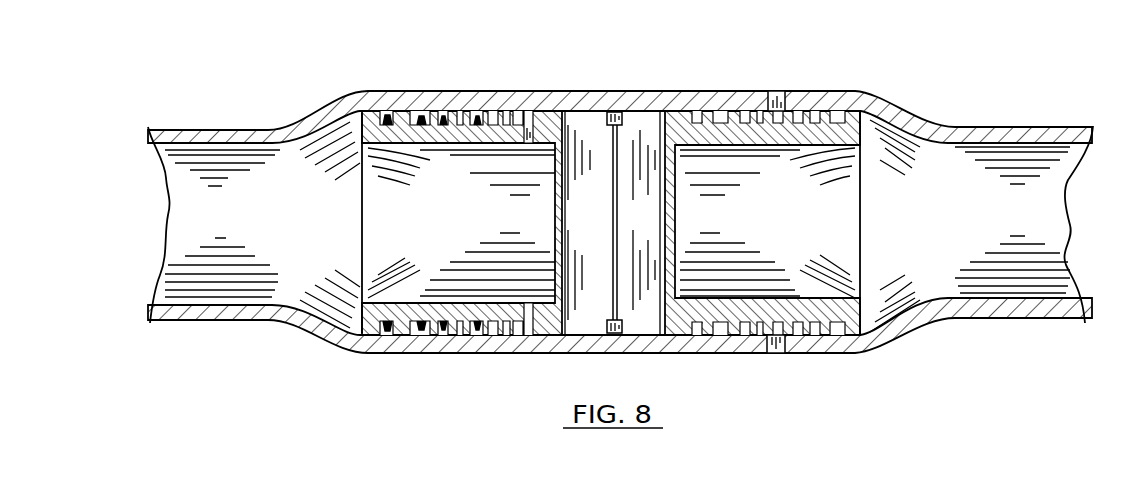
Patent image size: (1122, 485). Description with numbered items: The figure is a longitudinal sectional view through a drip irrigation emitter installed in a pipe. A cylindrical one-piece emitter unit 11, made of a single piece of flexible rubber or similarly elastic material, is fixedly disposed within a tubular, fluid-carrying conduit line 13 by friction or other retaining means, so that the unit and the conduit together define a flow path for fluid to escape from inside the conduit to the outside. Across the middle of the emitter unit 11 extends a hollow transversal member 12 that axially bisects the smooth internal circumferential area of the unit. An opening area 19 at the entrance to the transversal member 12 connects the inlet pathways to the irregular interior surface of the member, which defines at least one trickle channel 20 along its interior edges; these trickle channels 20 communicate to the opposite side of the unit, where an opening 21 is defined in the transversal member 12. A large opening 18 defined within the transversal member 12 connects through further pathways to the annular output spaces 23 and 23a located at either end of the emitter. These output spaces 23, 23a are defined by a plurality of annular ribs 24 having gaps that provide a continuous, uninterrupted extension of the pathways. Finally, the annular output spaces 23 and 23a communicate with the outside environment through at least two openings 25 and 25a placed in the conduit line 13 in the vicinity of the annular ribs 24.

The emitter unit 11 is at (340, 198).
The transversal member 12 is at (676, 254).
The conduit line 13 is at (235, 137).
The large opening 18 is at (653, 189).
The opening area 19 is at (614, 112).
The trickle channel 20 is at (618, 225).
The opening 21 is at (612, 334).
The annular output space 23 is at (462, 118).
The annular output space 23a is at (747, 112).
The annular ribs 24 is at (437, 117).
The opening 25 is at (777, 101).
The opening 25a is at (777, 340).